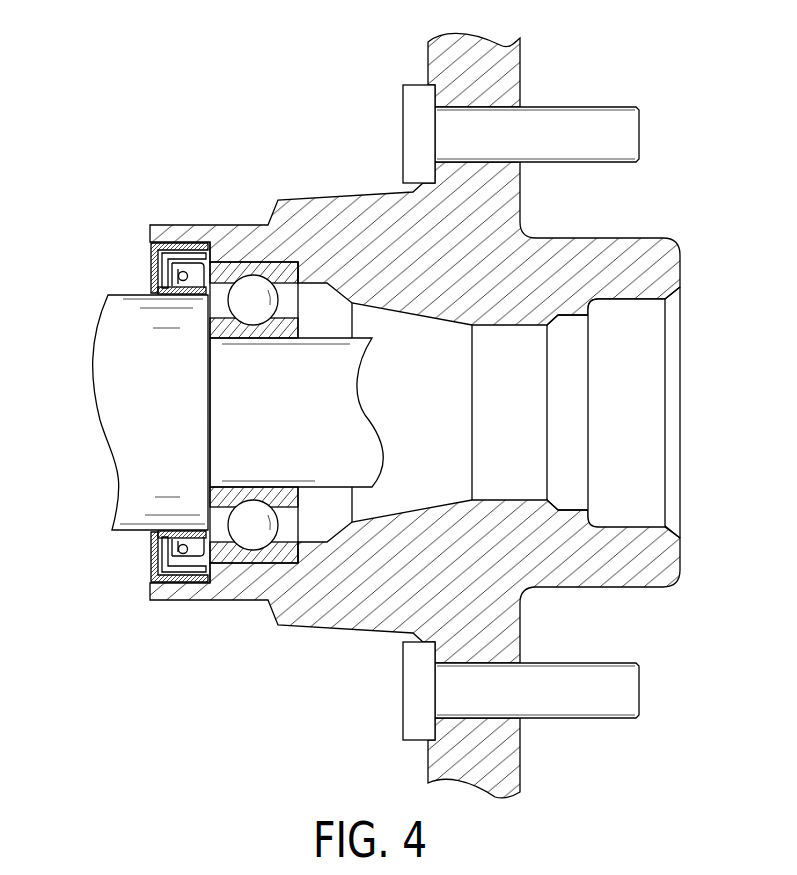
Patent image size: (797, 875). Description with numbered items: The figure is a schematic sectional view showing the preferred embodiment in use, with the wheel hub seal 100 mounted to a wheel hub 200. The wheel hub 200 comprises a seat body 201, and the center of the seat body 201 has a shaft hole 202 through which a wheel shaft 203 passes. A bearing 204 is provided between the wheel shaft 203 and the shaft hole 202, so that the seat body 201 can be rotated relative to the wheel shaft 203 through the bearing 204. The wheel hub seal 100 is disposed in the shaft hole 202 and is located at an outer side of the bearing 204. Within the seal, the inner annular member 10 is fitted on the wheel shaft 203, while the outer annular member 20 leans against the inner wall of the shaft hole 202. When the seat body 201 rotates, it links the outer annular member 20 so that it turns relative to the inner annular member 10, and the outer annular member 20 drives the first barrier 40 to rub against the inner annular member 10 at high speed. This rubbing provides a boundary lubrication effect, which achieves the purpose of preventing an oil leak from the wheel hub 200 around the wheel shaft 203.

The inner annular member 10 is at (136, 273).
The outer annular member 20 is at (206, 226).
The first barrier 40 is at (175, 258).
The wheel hub seal 100 is at (138, 252).
The wheel hub 200 is at (532, 67).
The seat body 201 is at (628, 250).
The shaft hole 202 is at (642, 418).
The wheel shaft 203 is at (152, 502).
The bearing 204 is at (235, 555).